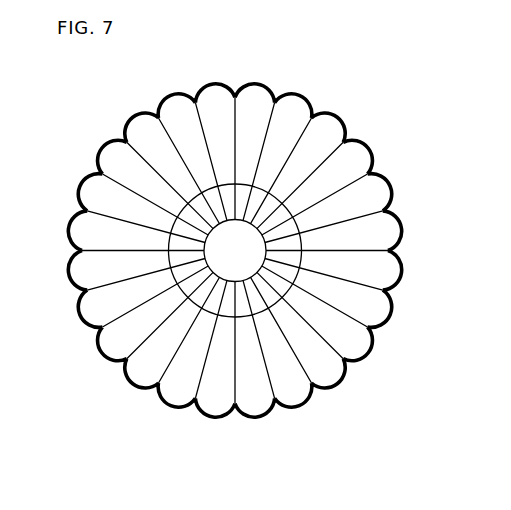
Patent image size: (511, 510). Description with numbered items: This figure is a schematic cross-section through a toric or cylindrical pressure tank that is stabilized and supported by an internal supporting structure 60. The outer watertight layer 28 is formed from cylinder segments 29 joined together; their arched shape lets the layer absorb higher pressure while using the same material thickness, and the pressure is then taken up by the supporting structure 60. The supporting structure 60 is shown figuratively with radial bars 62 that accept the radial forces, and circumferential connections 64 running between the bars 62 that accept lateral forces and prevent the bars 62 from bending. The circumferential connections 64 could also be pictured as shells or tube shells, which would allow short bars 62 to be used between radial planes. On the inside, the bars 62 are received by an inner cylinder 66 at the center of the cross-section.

The outer watertight layer 28 is at (416, 226).
The cylinder segments 29 is at (414, 273).
The supporting structure 60 is at (364, 189).
The radial bars 62 is at (316, 342).
The circumferential connections 64 is at (245, 336).
The inner cylinder 66 is at (226, 302).